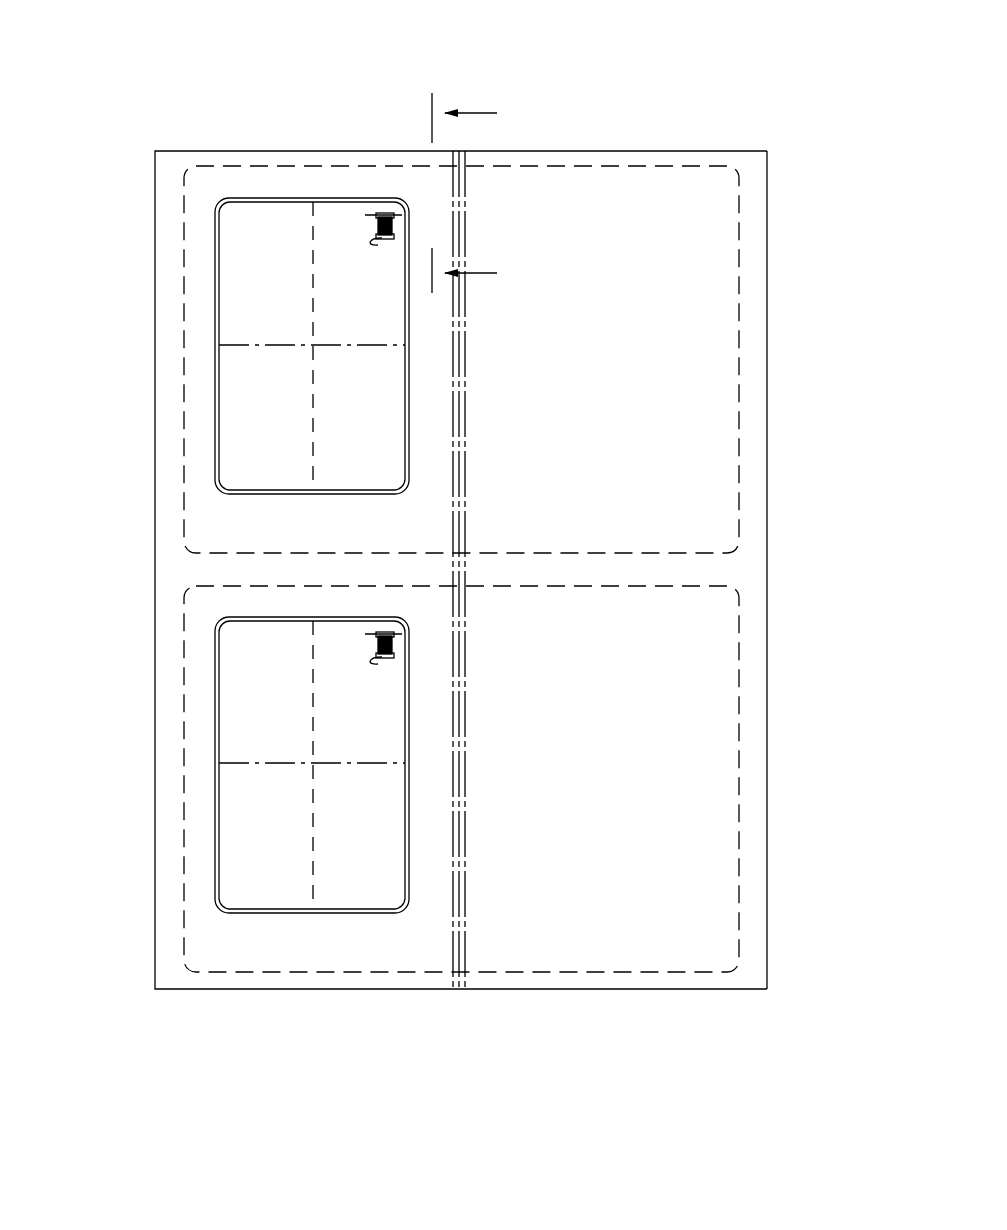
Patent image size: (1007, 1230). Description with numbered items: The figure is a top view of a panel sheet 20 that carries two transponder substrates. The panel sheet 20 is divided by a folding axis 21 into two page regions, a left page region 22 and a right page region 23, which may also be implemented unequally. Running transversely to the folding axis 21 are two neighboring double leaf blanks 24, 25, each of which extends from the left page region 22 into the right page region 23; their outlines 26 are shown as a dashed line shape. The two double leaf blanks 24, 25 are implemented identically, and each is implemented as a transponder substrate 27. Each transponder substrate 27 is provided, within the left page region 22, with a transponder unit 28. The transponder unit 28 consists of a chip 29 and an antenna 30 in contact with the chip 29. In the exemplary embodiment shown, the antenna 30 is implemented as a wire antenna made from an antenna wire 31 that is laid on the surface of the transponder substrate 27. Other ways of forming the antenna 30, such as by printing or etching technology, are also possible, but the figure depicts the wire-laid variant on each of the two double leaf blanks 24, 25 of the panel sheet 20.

The panel sheet 20 is at (661, 107).
The folding axis 21 is at (462, 976).
The left page region 22 is at (143, 560).
The right page region 23 is at (773, 556).
The double leaf blank 24 is at (691, 296).
The double leaf blank 25 is at (693, 797).
The outline 26 is at (533, 549).
The transponder substrate 27 is at (545, 591).
The transponder unit 28 is at (254, 571).
The chip 29 is at (378, 226).
The antenna 30 is at (255, 198).
The antenna wire 31 is at (297, 198).